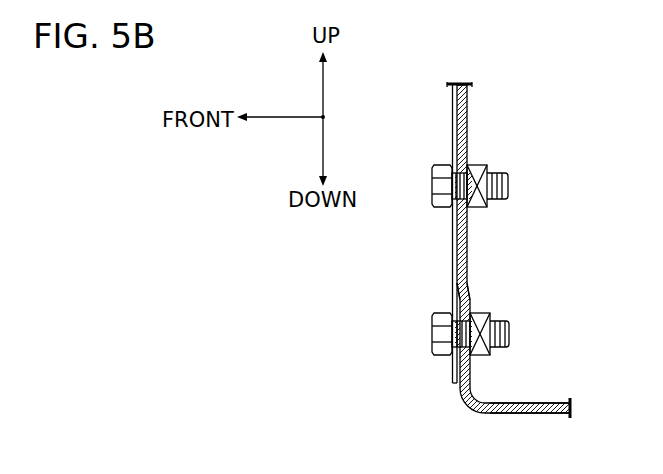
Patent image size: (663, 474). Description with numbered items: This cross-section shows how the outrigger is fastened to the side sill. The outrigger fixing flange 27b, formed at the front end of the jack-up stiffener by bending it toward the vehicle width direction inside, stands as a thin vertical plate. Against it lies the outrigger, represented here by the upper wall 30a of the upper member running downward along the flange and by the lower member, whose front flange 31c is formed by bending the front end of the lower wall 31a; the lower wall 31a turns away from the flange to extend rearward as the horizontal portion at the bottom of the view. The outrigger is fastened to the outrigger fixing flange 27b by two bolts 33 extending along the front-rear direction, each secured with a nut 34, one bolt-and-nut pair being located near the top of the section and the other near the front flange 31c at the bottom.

The outrigger fixing flange 27b is at (455, 252).
The upper wall 30a is at (467, 257).
The lower wall 31a is at (528, 413).
The front flange 31c is at (461, 291).
The bolt 33 is at (432, 180).
The nut 34 is at (476, 167).